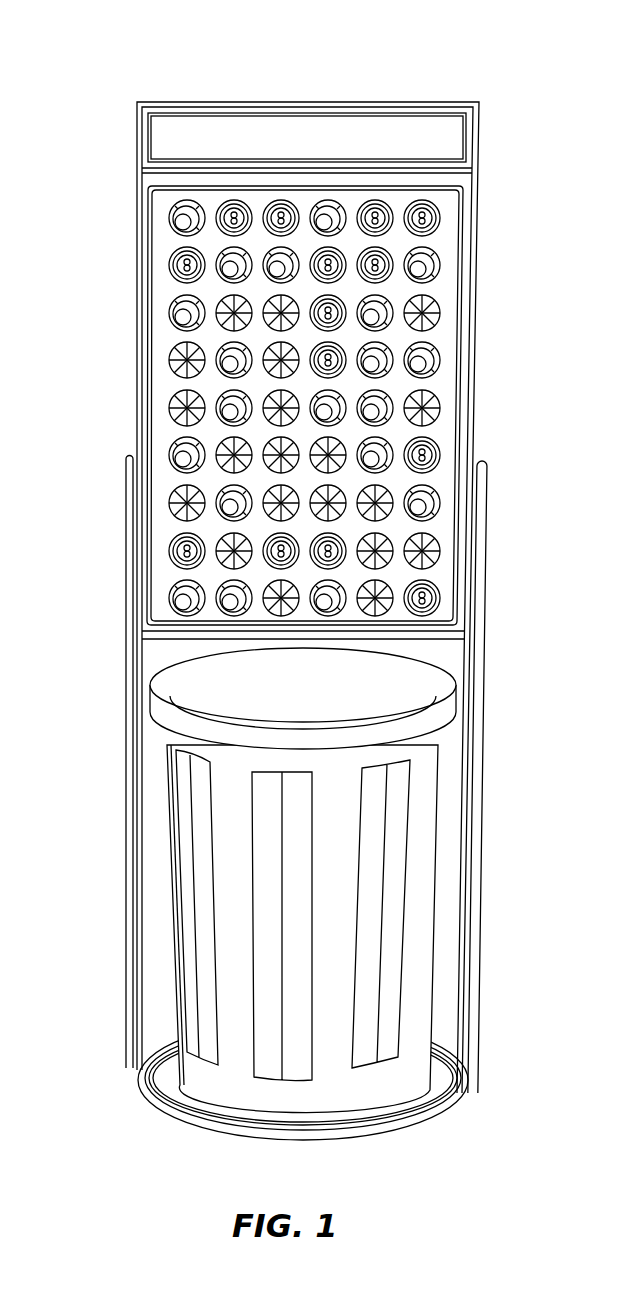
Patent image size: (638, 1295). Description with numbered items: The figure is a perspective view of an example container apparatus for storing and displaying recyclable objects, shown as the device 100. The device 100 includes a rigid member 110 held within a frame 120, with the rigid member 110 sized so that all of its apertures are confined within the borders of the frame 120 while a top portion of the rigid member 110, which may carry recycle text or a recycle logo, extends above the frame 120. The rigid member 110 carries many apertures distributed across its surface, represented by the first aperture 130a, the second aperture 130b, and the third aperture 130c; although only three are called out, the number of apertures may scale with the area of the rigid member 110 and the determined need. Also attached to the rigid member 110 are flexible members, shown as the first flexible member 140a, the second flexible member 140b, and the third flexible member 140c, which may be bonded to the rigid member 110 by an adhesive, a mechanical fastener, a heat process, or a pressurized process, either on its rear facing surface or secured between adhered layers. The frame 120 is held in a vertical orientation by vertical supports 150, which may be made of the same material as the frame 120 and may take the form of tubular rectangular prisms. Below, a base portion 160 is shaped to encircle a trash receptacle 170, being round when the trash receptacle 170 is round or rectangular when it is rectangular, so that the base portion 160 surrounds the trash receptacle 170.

The device 100 is at (136, 66).
The rigid member 110 is at (455, 197).
The frame 120 is at (470, 265).
The first aperture 130a is at (180, 218).
The second aperture 130b is at (180, 265).
The third aperture 130c is at (180, 313).
The first flexible member 140a is at (412, 316).
The second flexible member 140b is at (415, 410).
The third flexible member 140c is at (390, 507).
The vertical supports 150 is at (470, 792).
The base portion 160 is at (435, 1105).
The trash receptacle 170 is at (235, 958).